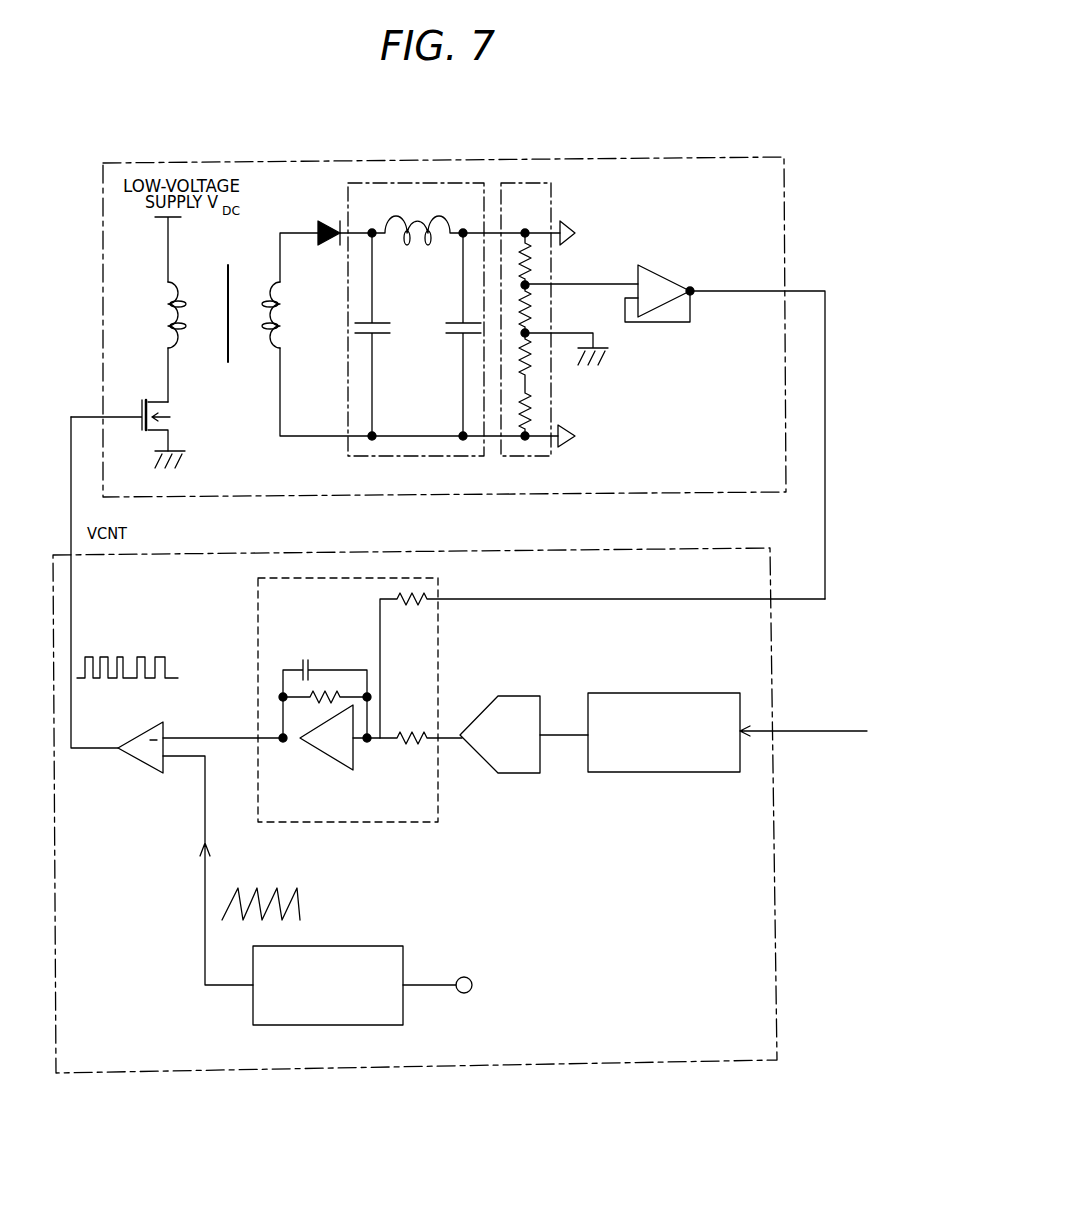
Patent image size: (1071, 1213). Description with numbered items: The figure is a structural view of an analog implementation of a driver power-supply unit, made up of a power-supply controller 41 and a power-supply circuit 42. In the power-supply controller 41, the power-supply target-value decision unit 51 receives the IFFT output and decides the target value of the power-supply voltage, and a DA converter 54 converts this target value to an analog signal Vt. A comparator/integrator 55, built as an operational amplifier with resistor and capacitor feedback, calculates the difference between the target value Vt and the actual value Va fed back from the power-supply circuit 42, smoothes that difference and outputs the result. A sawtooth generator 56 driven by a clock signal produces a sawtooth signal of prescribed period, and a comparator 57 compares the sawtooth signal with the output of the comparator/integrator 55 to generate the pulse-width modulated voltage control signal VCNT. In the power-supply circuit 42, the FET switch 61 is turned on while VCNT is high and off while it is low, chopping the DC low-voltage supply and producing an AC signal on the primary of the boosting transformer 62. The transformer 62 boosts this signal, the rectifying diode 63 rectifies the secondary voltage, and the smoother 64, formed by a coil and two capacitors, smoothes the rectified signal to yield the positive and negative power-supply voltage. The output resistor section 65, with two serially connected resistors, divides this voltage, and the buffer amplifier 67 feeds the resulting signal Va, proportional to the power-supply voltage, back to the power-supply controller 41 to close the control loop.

The power-supply controller 41 is at (777, 1013).
The power-supply circuit 42 is at (693, 157).
The power-supply target-value decision unit 51 is at (680, 692).
The DA converter 54 is at (520, 774).
The comparator/integrator 55 is at (413, 822).
The sawtooth generator 56 is at (377, 945).
The comparator 57 is at (140, 763).
The FET switch 61 is at (172, 424).
The boosting transformer 62 is at (163, 325).
The rectifying diode 63 is at (326, 220).
The smoother 64 is at (414, 456).
The output resistor section 65 is at (526, 456).
The buffer amplifier 67 is at (660, 322).